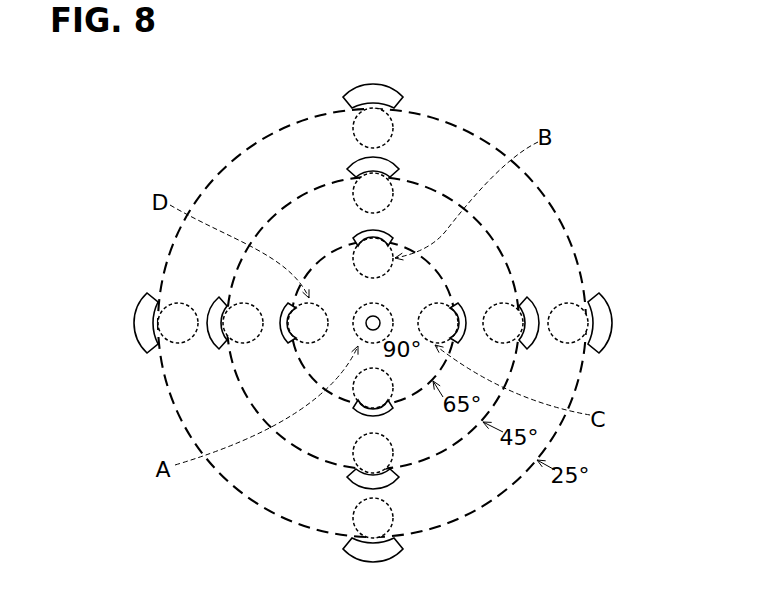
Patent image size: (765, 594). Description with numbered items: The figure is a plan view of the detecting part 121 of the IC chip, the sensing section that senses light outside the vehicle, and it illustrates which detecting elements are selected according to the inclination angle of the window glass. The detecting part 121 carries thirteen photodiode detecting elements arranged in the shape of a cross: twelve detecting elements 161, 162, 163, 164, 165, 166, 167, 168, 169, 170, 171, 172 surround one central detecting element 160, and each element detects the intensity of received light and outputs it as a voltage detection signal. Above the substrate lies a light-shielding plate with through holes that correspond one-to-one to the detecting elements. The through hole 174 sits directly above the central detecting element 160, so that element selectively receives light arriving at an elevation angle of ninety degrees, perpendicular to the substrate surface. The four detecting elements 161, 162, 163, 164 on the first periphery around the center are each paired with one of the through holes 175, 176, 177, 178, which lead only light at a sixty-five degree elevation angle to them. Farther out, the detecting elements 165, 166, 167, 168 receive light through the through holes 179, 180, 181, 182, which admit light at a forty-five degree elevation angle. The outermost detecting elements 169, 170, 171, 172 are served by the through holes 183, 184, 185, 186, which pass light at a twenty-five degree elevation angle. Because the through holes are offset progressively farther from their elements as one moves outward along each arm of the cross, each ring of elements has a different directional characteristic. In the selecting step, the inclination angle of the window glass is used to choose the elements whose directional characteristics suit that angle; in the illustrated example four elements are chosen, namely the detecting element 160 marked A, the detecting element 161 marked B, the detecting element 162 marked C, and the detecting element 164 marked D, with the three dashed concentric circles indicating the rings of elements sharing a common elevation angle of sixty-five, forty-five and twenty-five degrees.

The detecting part 121 is at (581, 228).
The detecting element 160 is at (358, 308).
The detecting element 161 is at (353, 250).
The detecting element 162 is at (444, 303).
The detecting element 163 is at (353, 389).
The detecting element 164 is at (316, 341).
The detecting element 165 is at (394, 198).
The detecting element 166 is at (489, 340).
The detecting element 167 is at (395, 447).
The detecting element 168 is at (251, 342).
The detecting element 169 is at (396, 141).
The detecting element 170 is at (559, 342).
The detecting element 171 is at (395, 513).
The detecting element 172 is at (187, 342).
The through hole 174 is at (380, 317).
The through hole 175 is at (356, 235).
The through hole 176 is at (466, 307).
The through hole 177 is at (361, 416).
The through hole 178 is at (285, 306).
The through hole 179 is at (350, 167).
The through hole 180 is at (531, 297).
The through hole 181 is at (357, 486).
The through hole 182 is at (213, 299).
The through hole 183 is at (347, 94).
The through hole 184 is at (602, 294).
The through hole 185 is at (350, 558).
The through hole 186 is at (142, 300).